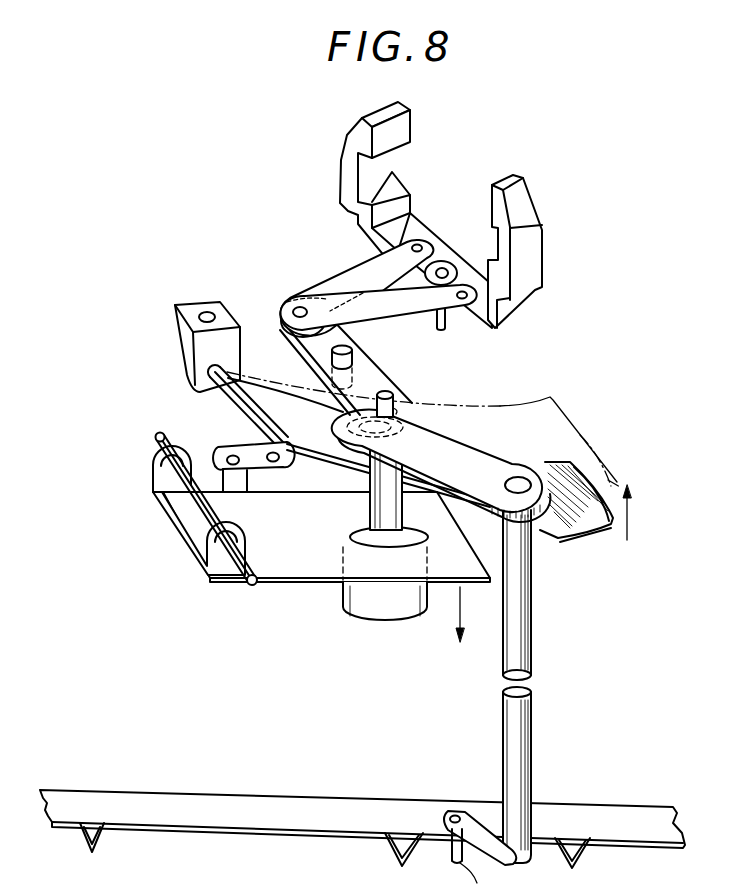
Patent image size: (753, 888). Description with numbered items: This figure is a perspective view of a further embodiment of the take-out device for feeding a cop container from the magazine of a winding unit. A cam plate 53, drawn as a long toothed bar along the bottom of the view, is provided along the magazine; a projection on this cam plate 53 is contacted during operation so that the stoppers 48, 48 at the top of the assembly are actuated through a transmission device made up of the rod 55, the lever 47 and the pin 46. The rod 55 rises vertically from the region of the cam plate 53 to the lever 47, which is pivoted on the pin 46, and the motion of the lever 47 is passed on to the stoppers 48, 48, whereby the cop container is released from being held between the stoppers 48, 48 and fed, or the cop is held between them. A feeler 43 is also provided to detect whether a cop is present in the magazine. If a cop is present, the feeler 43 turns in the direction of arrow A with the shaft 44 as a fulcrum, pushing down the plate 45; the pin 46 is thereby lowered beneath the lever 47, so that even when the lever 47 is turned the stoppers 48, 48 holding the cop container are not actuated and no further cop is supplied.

The feeler 43 is at (583, 543).
The shaft 44 is at (223, 400).
The plate 45 is at (305, 567).
The pin 46 is at (390, 400).
The lever 47 is at (516, 455).
The stoppers 48 is at (407, 127).
The cam plate 53 is at (242, 798).
The rod 55 is at (530, 748).
The arrow A is at (628, 517).